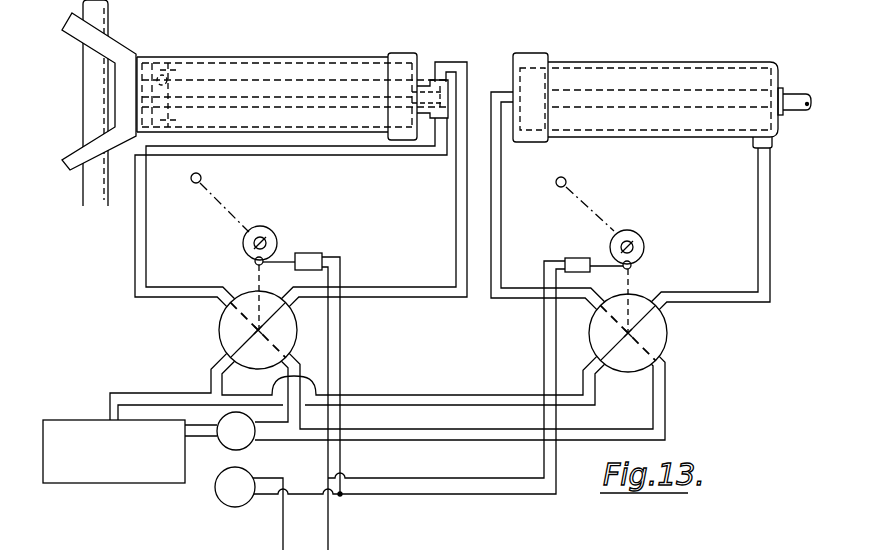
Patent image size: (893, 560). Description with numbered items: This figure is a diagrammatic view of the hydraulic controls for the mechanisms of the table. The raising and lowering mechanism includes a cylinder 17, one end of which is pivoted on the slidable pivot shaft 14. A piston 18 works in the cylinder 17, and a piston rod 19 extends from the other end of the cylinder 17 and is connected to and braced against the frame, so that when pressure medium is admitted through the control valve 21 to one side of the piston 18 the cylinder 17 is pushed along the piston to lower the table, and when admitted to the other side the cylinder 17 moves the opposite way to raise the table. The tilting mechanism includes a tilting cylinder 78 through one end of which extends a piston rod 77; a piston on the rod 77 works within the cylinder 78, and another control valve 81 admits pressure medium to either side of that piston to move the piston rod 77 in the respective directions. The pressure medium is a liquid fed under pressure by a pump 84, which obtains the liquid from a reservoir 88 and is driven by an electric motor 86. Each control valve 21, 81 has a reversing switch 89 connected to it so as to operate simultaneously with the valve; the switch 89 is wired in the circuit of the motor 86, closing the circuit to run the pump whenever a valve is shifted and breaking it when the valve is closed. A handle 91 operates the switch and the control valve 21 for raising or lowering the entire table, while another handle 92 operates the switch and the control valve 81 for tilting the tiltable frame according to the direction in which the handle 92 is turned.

The slidable pivot shaft 14 is at (84, 90).
The cylinder 17 is at (315, 57).
The piston 18 is at (166, 56).
The piston rod 19 is at (232, 80).
The control valve 21 is at (219, 329).
The piston rod 77 is at (791, 114).
The tilting cylinder 78 is at (667, 62).
The control valve 81 is at (667, 333).
The pump 84 is at (230, 445).
The electric motor 86 is at (229, 503).
The reservoir 88 is at (104, 483).
The reversing switch 89 is at (312, 253).
The handle 91 is at (212, 197).
The handle 92 is at (588, 195).